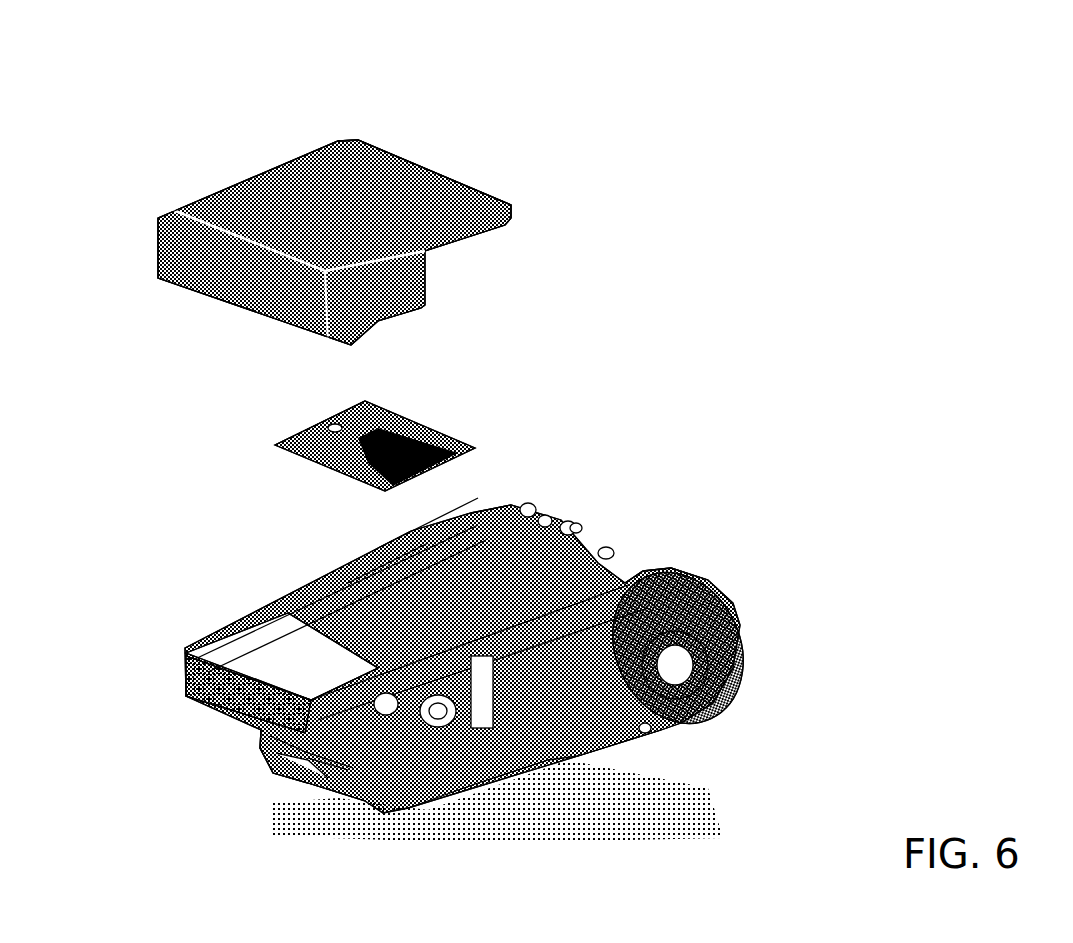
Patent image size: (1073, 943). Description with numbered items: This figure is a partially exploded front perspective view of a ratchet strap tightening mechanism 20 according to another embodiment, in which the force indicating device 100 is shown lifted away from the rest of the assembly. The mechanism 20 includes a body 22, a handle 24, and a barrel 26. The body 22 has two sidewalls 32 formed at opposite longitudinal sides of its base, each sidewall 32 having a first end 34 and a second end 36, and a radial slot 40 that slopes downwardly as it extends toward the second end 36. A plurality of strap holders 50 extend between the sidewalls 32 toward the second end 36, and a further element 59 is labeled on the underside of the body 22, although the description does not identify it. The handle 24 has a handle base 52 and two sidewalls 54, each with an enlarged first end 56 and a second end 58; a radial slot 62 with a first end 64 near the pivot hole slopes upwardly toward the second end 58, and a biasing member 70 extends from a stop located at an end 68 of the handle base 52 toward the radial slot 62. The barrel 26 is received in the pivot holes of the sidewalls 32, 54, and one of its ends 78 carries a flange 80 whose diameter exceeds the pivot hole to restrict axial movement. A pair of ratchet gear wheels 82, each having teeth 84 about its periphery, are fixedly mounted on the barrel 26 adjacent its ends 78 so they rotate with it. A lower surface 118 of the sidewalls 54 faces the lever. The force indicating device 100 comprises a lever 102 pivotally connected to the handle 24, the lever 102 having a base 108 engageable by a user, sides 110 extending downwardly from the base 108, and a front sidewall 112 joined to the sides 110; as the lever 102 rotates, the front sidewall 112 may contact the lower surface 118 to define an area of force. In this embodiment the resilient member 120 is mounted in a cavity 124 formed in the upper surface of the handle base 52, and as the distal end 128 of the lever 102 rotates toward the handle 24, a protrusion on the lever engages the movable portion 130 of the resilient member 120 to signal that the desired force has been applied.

The ratchet strap tightening mechanism 20 is at (807, 220).
The body 22 is at (455, 790).
The handle 24 is at (200, 622).
The barrel 26 is at (693, 707).
The sidewalls 32 is at (563, 750).
The first end 34 is at (600, 540).
The second end 36 is at (253, 743).
The radial slot 40 is at (523, 773).
The strap holders 50 is at (290, 787).
The handle base 52 is at (272, 640).
The sidewalls 54 is at (387, 530).
The first end 56 is at (560, 513).
The second end 58 is at (178, 690).
The bottom plate 59 is at (603, 740).
The radial slot 62 is at (623, 567).
The first end 64 is at (677, 560).
The end 68 is at (357, 567).
The biasing member 70 is at (477, 510).
The end 78 is at (730, 590).
The flange 80 is at (697, 563).
The ratchet gear wheels 82 is at (520, 497).
The teeth 84 is at (537, 510).
The force indicating device 100 is at (190, 103).
The lever 102 is at (287, 148).
The base 108 is at (377, 143).
The sides 110 is at (403, 300).
The front sidewall 112 is at (193, 293).
The lower surface 118 is at (317, 787).
The resilient member 120 is at (410, 403).
The cavity 124 is at (337, 613).
The distal end 128 is at (457, 177).
The movable portion 130 is at (337, 437).